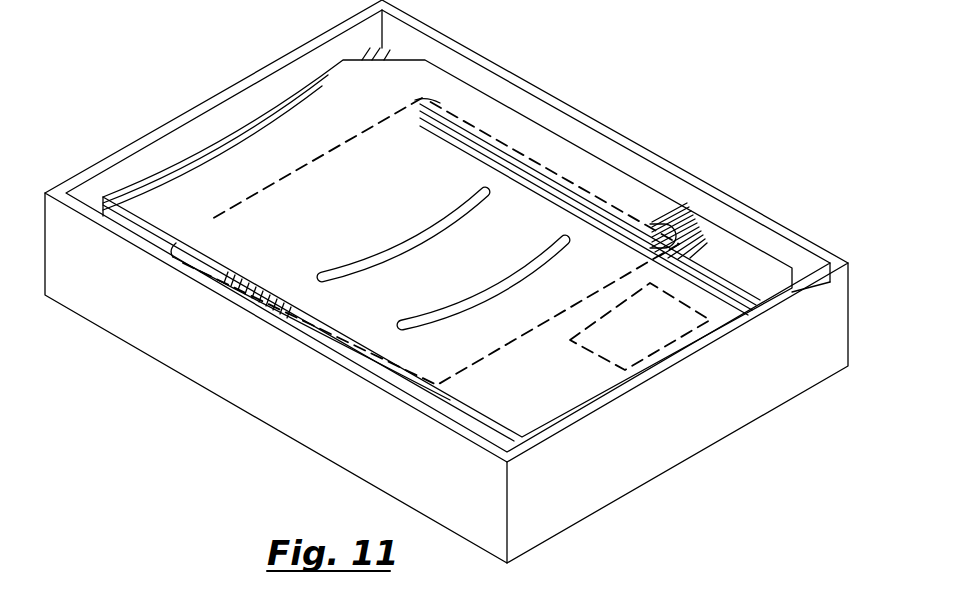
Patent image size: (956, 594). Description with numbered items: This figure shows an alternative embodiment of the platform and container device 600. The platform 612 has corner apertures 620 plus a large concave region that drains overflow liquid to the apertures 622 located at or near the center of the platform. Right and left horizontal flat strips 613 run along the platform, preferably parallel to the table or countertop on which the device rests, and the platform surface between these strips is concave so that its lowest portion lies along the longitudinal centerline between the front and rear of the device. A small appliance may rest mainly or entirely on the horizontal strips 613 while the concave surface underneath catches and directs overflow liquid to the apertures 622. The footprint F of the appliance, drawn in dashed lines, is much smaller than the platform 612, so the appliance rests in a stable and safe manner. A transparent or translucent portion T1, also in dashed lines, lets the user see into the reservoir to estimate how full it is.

The device 600 is at (613, 113).
The platform 612 is at (372, 200).
The horizontal flat strips 613 is at (130, 222).
The corner apertures 620 is at (797, 279).
The apertures 622 is at (473, 196).
The footprint F is at (540, 343).
The transparent or translucent portion T1 is at (662, 348).